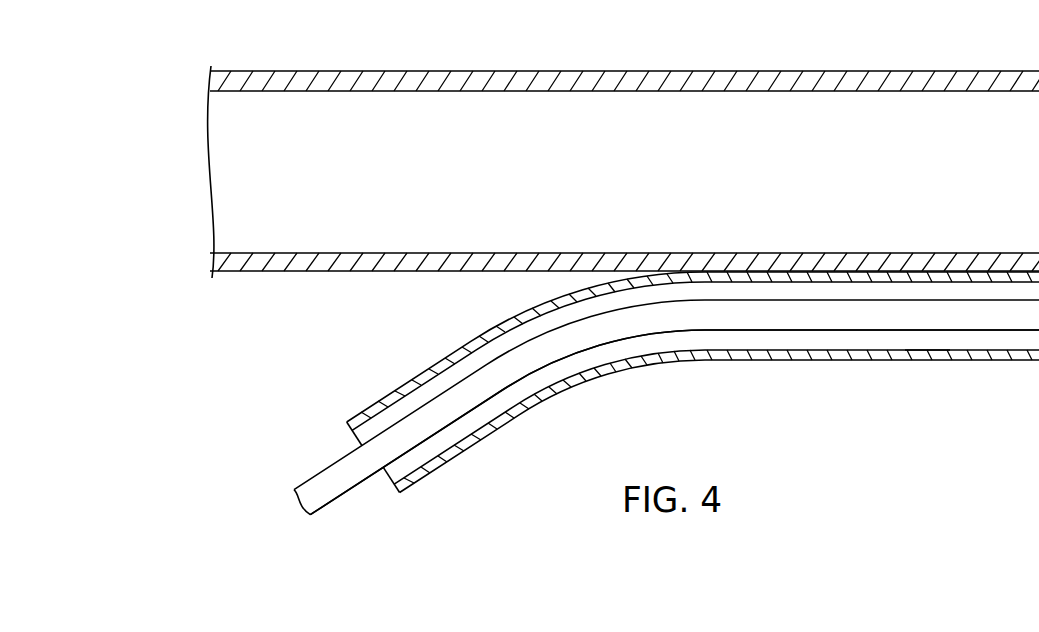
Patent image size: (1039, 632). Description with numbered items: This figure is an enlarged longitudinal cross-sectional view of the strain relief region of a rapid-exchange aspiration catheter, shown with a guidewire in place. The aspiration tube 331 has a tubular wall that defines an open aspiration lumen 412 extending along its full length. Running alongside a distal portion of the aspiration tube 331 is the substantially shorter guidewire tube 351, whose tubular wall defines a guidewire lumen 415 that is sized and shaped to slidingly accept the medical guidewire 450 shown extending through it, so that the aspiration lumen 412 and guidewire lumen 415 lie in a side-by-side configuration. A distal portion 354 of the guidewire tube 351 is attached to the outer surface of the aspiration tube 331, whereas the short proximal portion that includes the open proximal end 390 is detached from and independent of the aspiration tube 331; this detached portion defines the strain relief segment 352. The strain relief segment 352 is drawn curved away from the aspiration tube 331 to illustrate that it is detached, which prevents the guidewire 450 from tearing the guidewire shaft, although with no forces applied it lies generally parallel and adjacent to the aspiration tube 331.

The aspiration tube 331 is at (788, 66).
The aspiration lumen 412 is at (625, 182).
The distal portion of guidewire tube 354 is at (928, 356).
The medical guidewire 450 is at (327, 472).
The guidewire lumen 415 is at (723, 341).
The strain relief segment 352 is at (549, 401).
The guidewire tube 351 is at (782, 366).
The open proximal end of guidewire tube 390 is at (385, 481).